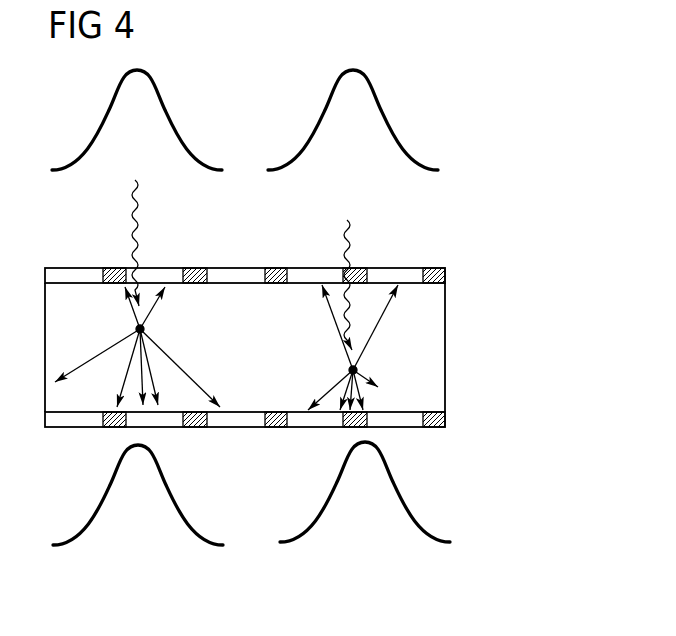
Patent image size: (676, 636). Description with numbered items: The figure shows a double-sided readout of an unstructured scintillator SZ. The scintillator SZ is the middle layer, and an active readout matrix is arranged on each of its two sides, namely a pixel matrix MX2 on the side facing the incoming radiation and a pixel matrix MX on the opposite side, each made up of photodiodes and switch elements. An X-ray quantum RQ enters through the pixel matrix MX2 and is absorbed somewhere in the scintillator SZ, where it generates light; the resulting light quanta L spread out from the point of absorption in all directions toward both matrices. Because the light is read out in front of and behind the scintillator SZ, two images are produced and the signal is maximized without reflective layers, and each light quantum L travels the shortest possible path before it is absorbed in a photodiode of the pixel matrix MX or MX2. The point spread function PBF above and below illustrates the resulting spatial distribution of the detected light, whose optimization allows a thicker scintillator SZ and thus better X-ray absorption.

The point spread function PBF is at (410, 113).
The X-ray quantum RQ is at (137, 197).
The pixel matrix MX2 is at (450, 274).
The pixel matrix MX is at (450, 418).
The scintillator SZ is at (437, 327).
The light quantum L is at (407, 376).